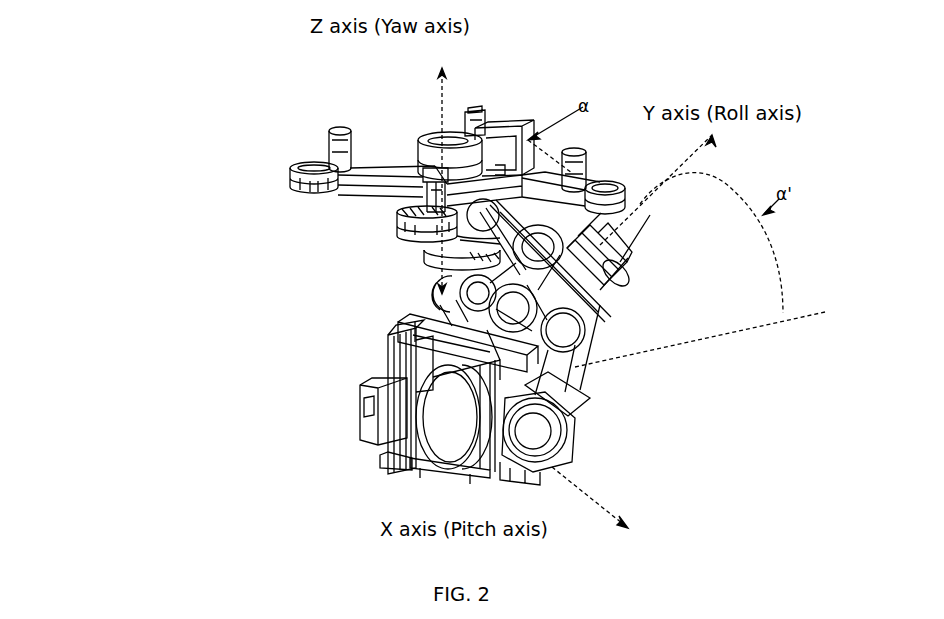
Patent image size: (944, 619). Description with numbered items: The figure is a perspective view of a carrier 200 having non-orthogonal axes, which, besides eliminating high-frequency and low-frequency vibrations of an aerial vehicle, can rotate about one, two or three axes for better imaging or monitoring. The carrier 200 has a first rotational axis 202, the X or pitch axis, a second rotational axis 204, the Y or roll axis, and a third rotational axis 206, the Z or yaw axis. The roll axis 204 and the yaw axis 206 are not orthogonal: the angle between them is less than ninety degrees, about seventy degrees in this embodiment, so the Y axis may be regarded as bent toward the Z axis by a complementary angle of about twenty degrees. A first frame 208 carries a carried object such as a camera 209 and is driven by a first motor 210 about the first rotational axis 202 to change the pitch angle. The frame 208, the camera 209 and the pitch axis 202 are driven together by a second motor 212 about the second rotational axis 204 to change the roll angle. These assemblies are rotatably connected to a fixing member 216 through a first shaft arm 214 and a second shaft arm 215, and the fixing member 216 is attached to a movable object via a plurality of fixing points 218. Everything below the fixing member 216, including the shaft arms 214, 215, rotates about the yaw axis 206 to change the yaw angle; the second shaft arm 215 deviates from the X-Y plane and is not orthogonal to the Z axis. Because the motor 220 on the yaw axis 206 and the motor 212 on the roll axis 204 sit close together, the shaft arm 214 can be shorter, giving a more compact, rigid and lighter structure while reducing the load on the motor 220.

The carrier 200 is at (200, 170).
The first rotational axis 202 is at (574, 491).
The second rotational axis 204 is at (645, 208).
The third rotational axis 206 is at (440, 93).
The first frame 208 is at (392, 348).
The camera 209 is at (378, 430).
The first motor 210 is at (538, 444).
The second motor 212 is at (610, 283).
The first shaft arm 214 is at (540, 253).
The second shaft arm 215 is at (453, 260).
The fixing member 216 is at (382, 177).
The fixing points 218 is at (395, 218).
The motor 220 is at (430, 160).